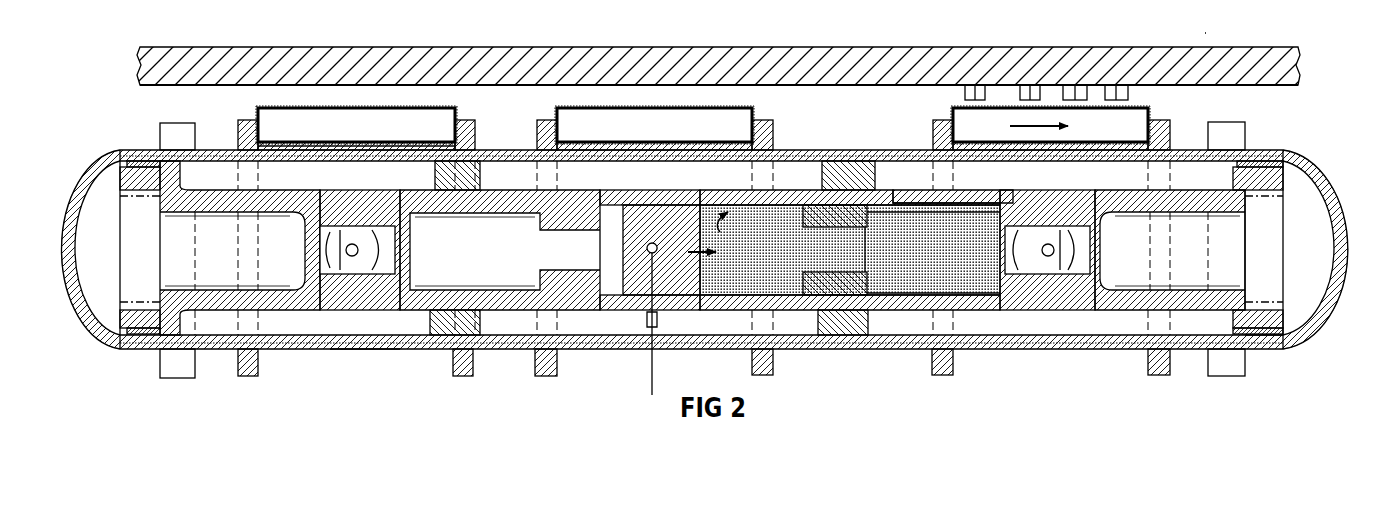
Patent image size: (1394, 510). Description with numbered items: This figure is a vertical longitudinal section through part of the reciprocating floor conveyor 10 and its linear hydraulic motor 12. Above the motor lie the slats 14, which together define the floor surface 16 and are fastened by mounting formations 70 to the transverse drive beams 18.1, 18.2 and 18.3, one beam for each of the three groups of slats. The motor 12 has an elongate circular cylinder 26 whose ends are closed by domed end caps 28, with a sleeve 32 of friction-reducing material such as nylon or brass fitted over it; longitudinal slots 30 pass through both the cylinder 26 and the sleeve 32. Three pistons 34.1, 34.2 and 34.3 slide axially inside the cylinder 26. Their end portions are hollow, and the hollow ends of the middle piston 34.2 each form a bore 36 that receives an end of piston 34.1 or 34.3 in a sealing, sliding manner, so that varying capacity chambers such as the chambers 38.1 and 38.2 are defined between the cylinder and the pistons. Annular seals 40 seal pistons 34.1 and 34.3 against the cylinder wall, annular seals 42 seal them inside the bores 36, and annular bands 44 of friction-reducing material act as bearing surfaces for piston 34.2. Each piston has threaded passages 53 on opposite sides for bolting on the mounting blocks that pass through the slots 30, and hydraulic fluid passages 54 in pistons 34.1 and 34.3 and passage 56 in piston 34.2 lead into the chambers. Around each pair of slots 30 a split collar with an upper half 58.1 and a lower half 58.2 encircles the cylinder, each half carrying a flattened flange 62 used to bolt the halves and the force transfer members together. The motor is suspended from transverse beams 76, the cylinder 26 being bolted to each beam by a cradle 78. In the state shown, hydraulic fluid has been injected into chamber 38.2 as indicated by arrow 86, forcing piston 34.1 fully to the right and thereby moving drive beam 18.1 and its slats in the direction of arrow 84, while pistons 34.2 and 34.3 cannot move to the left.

The reciprocating floor conveyor 10 is at (1210, 31).
The linear hydraulic motor 12 is at (1292, 124).
The slat 14 is at (1150, 65).
The floor surface 16 is at (906, 46).
The transverse drive beam 18.1 is at (986, 124).
The transverse drive beam 18.2 is at (643, 126).
The transverse drive beam 18.3 is at (345, 128).
The cylinder 26 is at (1277, 343).
The domed end cap 28 is at (52, 264).
The slot 30 is at (396, 302).
The sleeve 32 is at (890, 148).
The piston 34.1 is at (1223, 312).
The piston 34.2 is at (510, 300).
The piston 34.3 is at (283, 313).
The bore 36 is at (733, 210).
The varying capacity chamber 38.1 is at (1322, 167).
The varying capacity chamber 38.2 is at (784, 293).
The annular hydraulic fluid seal 40 is at (142, 345).
The annular hydraulic fluid seal 42 is at (588, 202).
The annular band of friction-reducing material 44 is at (426, 347).
The threaded passage 53 is at (365, 225).
The hydraulic fluid passage 54 is at (351, 262).
The hydraulic fluid passage 56 is at (641, 306).
The upper collar half 58.1 is at (393, 135).
The lower collar half 58.2 is at (357, 352).
The flange 62 is at (253, 372).
The mounting formation 70 is at (1135, 95).
The transverse beam 76 is at (175, 135).
The cradle 78 is at (175, 363).
The arrow 84 is at (1042, 128).
The arrow 86 is at (652, 368).